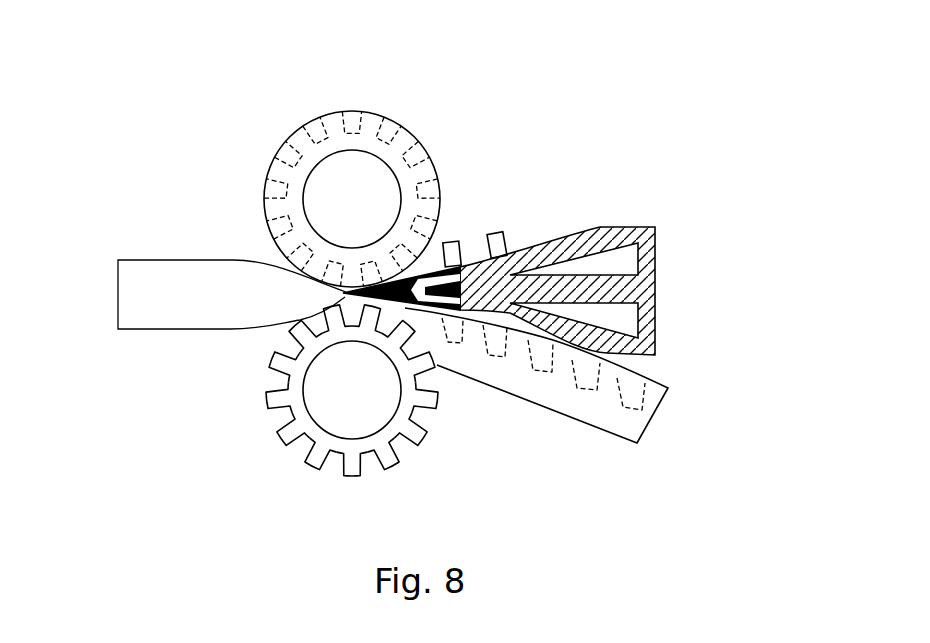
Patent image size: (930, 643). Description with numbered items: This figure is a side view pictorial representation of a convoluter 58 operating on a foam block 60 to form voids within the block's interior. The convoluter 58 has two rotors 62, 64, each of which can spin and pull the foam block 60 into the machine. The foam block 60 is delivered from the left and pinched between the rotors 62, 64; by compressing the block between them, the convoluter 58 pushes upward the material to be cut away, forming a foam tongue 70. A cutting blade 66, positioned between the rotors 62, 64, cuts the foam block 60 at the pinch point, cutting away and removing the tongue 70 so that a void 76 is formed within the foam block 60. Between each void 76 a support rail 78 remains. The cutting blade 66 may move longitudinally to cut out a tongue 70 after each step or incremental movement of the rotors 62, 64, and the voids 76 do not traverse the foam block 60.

The convoluter 58 is at (428, 110).
The foam block 60 is at (140, 263).
The rotor 62 is at (301, 134).
The rotor 64 is at (310, 463).
The cutting blade 66 is at (658, 238).
The foam tongue 70 is at (448, 243).
The void 76 is at (633, 400).
The support rail 78 is at (607, 390).